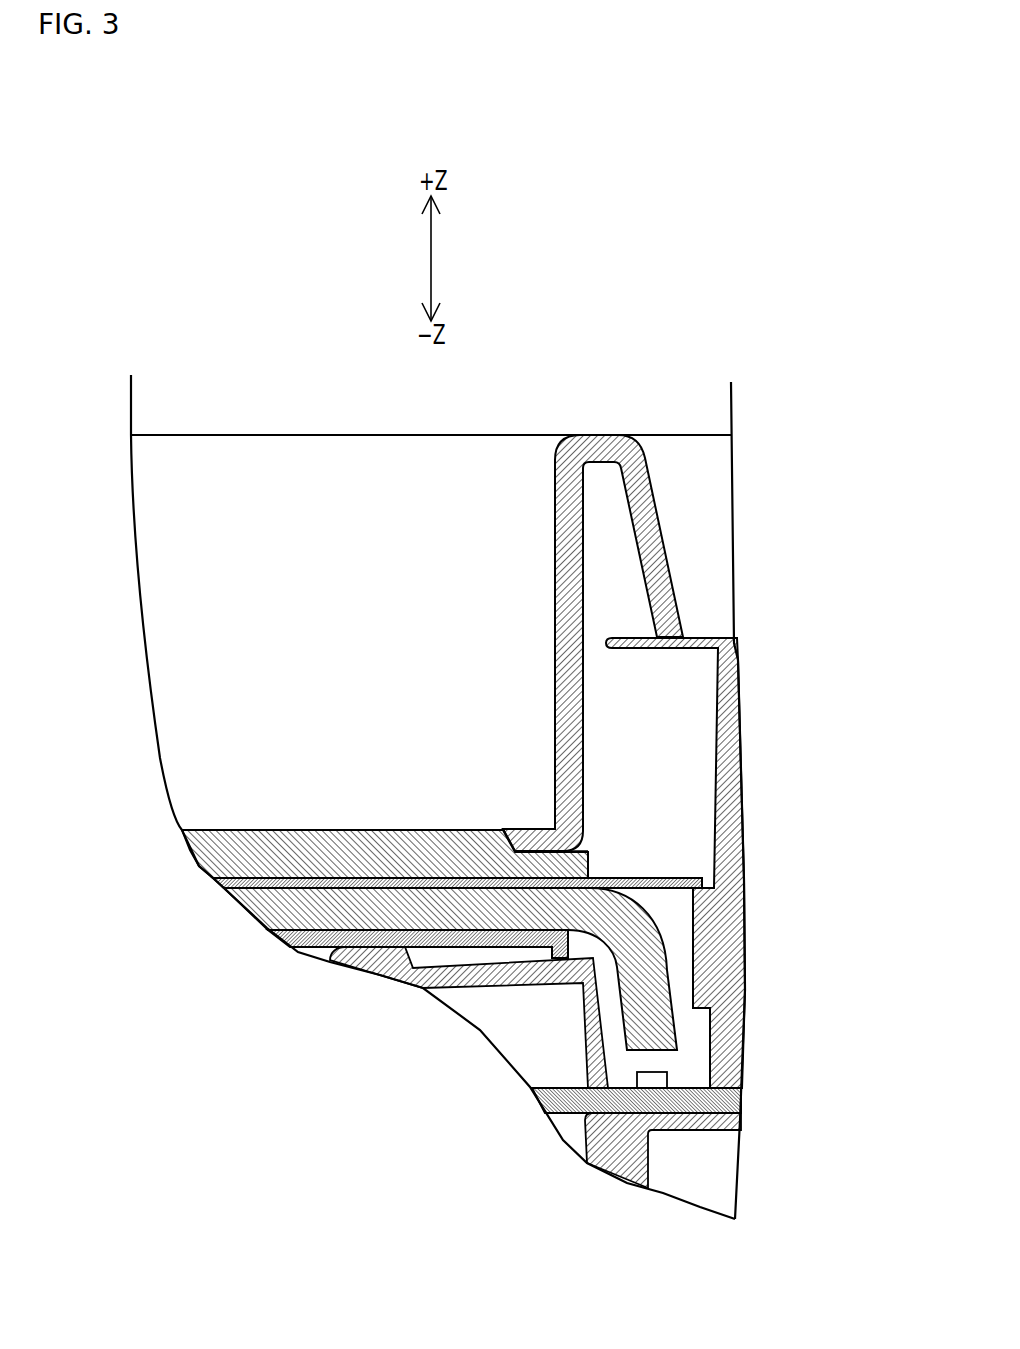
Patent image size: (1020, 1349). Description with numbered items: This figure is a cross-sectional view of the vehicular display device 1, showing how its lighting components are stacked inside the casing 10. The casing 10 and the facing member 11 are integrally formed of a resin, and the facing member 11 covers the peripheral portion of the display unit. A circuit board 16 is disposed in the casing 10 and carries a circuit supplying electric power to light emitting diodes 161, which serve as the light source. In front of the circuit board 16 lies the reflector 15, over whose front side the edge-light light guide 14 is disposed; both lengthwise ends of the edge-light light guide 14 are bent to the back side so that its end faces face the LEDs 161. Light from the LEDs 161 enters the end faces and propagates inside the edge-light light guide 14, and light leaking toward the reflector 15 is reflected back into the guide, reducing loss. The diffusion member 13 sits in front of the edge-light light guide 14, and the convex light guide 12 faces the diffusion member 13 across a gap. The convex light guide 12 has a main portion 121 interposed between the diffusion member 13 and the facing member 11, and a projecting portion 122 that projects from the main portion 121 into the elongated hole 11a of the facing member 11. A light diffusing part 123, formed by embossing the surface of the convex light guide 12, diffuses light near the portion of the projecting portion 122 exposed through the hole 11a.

The vehicular display device 1 is at (662, 347).
The casing 10 is at (729, 689).
The facing member 11 is at (598, 452).
The hole 11a is at (502, 830).
The convex light guide 12 is at (385, 763).
The main portion 121 is at (383, 877).
The projecting portion 122 is at (430, 848).
The light diffusing part 123 is at (277, 827).
The diffusion member 13 is at (647, 878).
The edge-light light guide 14 is at (660, 1013).
The reflector 15 is at (303, 957).
The circuit board 16 is at (558, 1105).
The light emitting diode 161 is at (660, 1082).